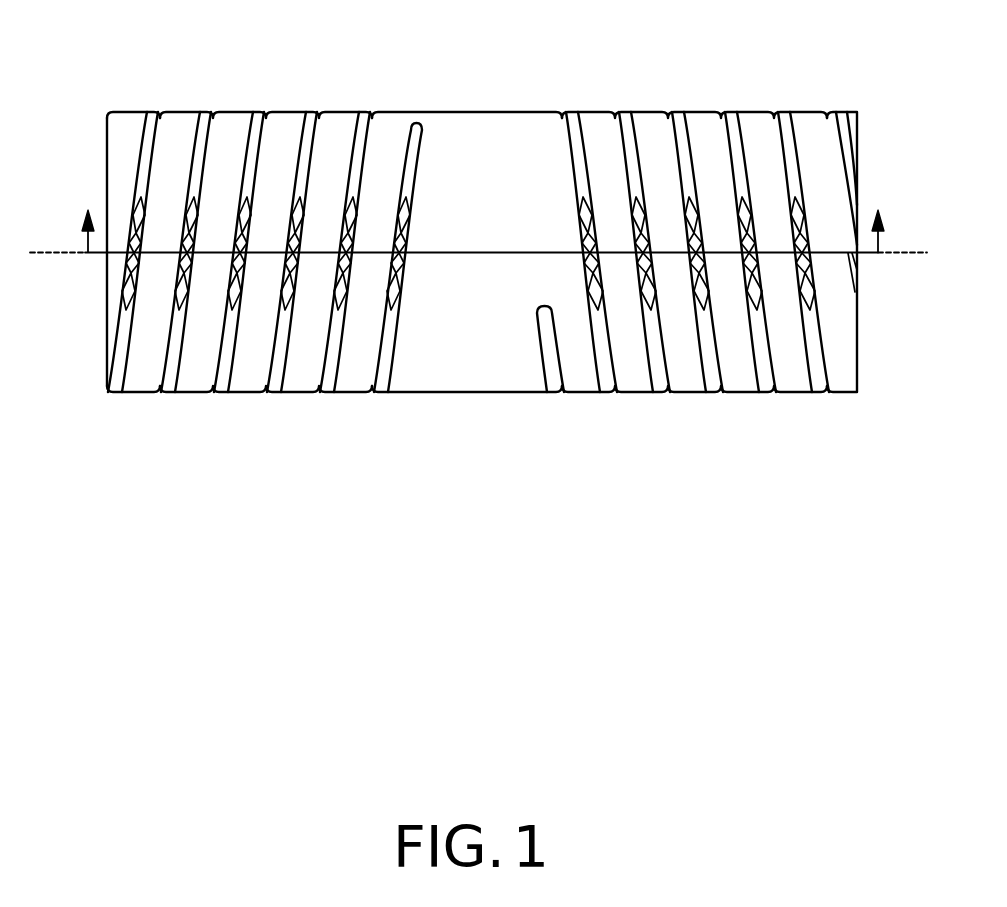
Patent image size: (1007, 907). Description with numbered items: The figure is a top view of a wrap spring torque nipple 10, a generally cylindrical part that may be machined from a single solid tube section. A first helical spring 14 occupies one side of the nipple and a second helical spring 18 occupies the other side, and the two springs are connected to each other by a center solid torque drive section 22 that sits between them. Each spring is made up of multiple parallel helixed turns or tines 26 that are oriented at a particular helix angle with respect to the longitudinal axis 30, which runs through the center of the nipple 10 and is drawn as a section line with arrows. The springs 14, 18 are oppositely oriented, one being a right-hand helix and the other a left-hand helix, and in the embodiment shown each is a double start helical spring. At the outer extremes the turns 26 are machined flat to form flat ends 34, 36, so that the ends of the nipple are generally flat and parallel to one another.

The wrap spring torque nipple 10 is at (519, 94).
The first helical spring 14 is at (705, 120).
The second helical spring 18 is at (242, 118).
The center solid torque drive section 22 is at (470, 125).
The turns 26 is at (640, 120).
The longitudinal axis 30 is at (897, 253).
The flat end 34 is at (858, 148).
The flat end 36 is at (107, 162).